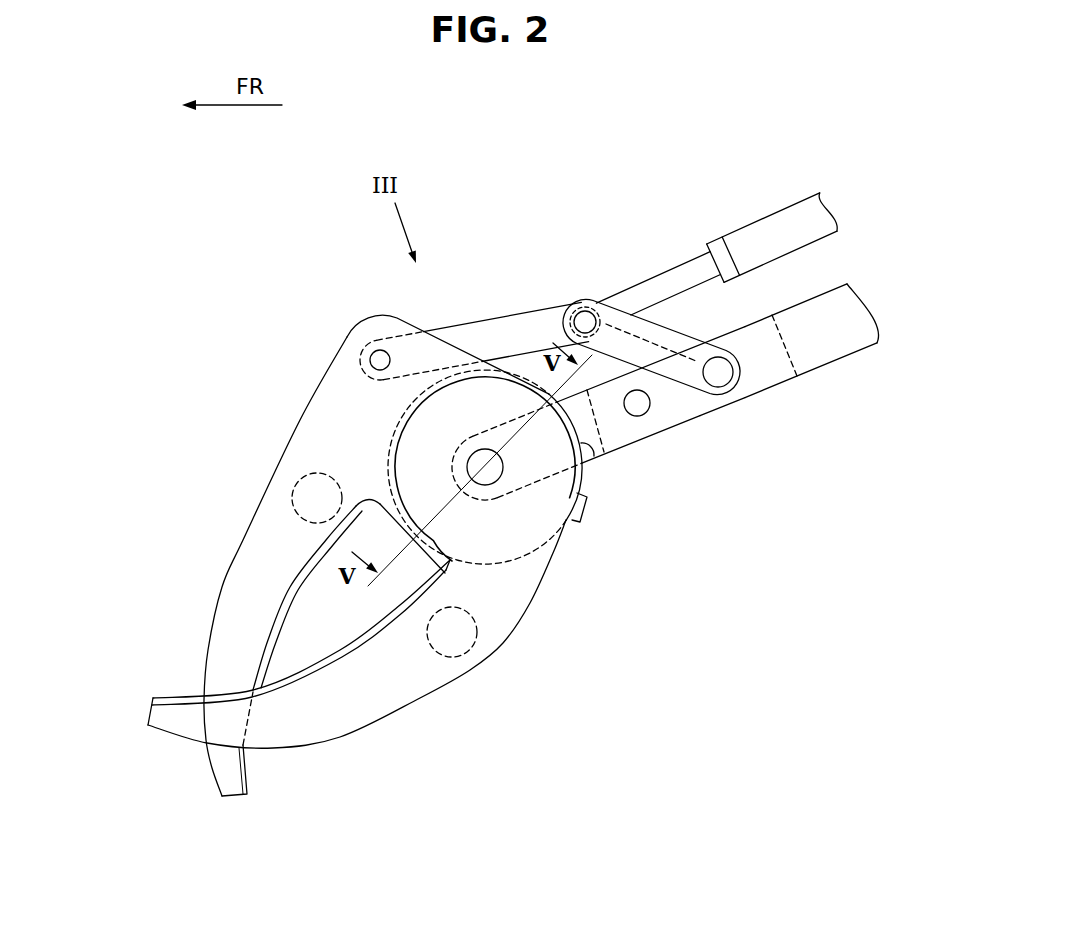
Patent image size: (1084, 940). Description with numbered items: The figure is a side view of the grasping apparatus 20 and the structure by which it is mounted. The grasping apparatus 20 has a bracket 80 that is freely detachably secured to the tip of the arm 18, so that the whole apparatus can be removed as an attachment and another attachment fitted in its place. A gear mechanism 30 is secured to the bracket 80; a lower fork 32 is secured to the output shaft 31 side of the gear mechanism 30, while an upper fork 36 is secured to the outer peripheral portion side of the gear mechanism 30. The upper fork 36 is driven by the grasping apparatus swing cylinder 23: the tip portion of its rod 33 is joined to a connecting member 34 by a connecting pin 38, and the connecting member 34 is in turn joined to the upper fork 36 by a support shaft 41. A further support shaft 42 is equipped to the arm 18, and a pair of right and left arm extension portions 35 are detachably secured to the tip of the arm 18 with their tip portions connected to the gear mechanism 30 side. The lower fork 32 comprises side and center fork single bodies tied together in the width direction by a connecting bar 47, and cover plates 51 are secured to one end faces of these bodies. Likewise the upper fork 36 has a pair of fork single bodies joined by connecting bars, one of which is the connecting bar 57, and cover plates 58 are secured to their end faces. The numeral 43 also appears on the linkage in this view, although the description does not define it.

The arm 18 is at (805, 353).
The grasping apparatus 20 is at (290, 433).
The grasping apparatus swing cylinder 23 is at (757, 206).
The gear mechanism 30 is at (600, 455).
The output shaft 31 is at (503, 475).
The lower fork 32 is at (410, 697).
The rod 33 is at (665, 282).
The connecting member 34 is at (490, 318).
The arm extension portion 35 is at (768, 370).
The upper fork 36 is at (243, 553).
The connecting pin 38 is at (587, 310).
The support shaft 41 is at (373, 350).
The support shaft 42 is at (722, 380).
The link 43 is at (678, 372).
The connecting bar 47 is at (473, 647).
The cover plates 51 is at (183, 695).
The connecting bar 57 is at (292, 492).
The cover plates 58 is at (250, 773).
The bracket 80 is at (657, 440).